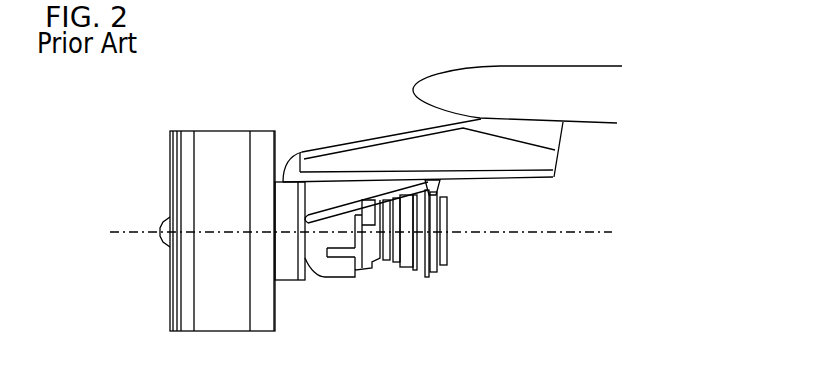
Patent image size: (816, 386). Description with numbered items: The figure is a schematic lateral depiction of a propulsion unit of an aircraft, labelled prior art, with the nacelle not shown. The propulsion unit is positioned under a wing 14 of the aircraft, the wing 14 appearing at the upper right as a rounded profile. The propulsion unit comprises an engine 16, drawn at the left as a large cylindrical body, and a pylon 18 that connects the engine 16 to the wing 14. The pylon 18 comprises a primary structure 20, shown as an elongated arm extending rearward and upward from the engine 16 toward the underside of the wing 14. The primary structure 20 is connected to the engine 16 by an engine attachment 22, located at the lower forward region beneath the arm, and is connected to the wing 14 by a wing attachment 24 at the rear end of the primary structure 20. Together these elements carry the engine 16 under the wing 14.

The wing 14 is at (507, 72).
The engine 16 is at (157, 268).
The pylon 18 is at (308, 117).
The primary structure 20 is at (403, 156).
The engine attachment 22 is at (445, 187).
The wing attachment 24 is at (585, 148).